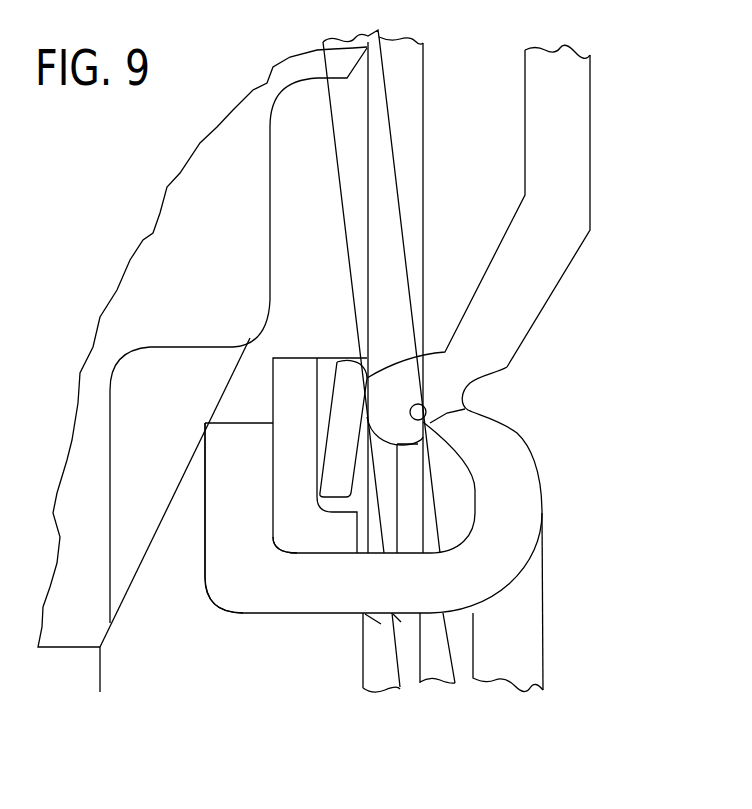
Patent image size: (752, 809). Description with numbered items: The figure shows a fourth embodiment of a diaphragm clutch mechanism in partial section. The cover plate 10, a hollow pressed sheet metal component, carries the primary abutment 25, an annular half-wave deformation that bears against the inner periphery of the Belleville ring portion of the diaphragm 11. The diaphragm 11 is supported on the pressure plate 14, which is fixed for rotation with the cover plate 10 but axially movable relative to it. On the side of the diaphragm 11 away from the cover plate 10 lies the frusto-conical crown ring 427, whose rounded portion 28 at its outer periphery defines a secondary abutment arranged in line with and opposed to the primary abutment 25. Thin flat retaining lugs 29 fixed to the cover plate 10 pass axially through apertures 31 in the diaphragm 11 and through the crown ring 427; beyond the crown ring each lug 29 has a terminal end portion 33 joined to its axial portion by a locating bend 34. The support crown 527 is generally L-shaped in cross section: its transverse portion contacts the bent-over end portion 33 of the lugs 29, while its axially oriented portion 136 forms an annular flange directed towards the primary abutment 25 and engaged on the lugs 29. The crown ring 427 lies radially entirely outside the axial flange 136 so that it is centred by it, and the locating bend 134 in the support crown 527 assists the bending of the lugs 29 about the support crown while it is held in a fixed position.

The cover plate 10 is at (595, 199).
The diaphragm 11 is at (428, 188).
The pressure plate 14 is at (190, 198).
The primary abutment 25 is at (487, 408).
The rounded portion 28 is at (421, 404).
The retaining lugs 29 is at (292, 622).
The apertures 31 is at (407, 445).
The terminal end portion 33 is at (212, 542).
The locating bend 34 is at (230, 607).
The locating bend 134 is at (282, 552).
The axially oriented portion 136 is at (338, 548).
The crown ring 427 is at (335, 350).
The support crown 527 is at (240, 406).